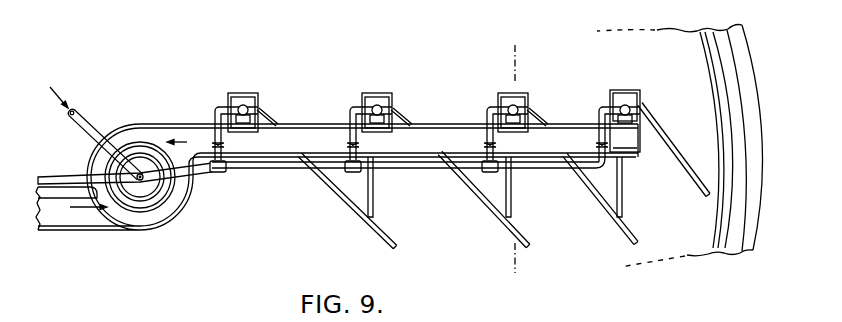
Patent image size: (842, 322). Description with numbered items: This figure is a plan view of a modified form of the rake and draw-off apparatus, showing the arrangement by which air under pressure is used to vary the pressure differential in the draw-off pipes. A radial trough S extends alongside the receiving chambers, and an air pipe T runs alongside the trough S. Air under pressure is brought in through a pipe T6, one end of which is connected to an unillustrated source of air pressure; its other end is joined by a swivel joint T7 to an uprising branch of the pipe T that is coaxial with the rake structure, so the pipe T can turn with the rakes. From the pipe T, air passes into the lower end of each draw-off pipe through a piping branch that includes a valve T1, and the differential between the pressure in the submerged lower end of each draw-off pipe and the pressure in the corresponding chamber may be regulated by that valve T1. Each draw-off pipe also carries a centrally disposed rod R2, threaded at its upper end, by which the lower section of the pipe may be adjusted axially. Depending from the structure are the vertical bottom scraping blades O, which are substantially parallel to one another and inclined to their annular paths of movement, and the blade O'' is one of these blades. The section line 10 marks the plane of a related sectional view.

The radial trough S is at (85, 220).
The pipe T is at (278, 169).
The valve T1 is at (215, 140).
The pipe T6 is at (92, 127).
The swivel joint T7 is at (141, 182).
The rod R2 is at (373, 104).
The bottom scraping blades O is at (445, 200).
The end inclined bar O'' is at (600, 207).
The section line 10- 10 is at (510, 60).